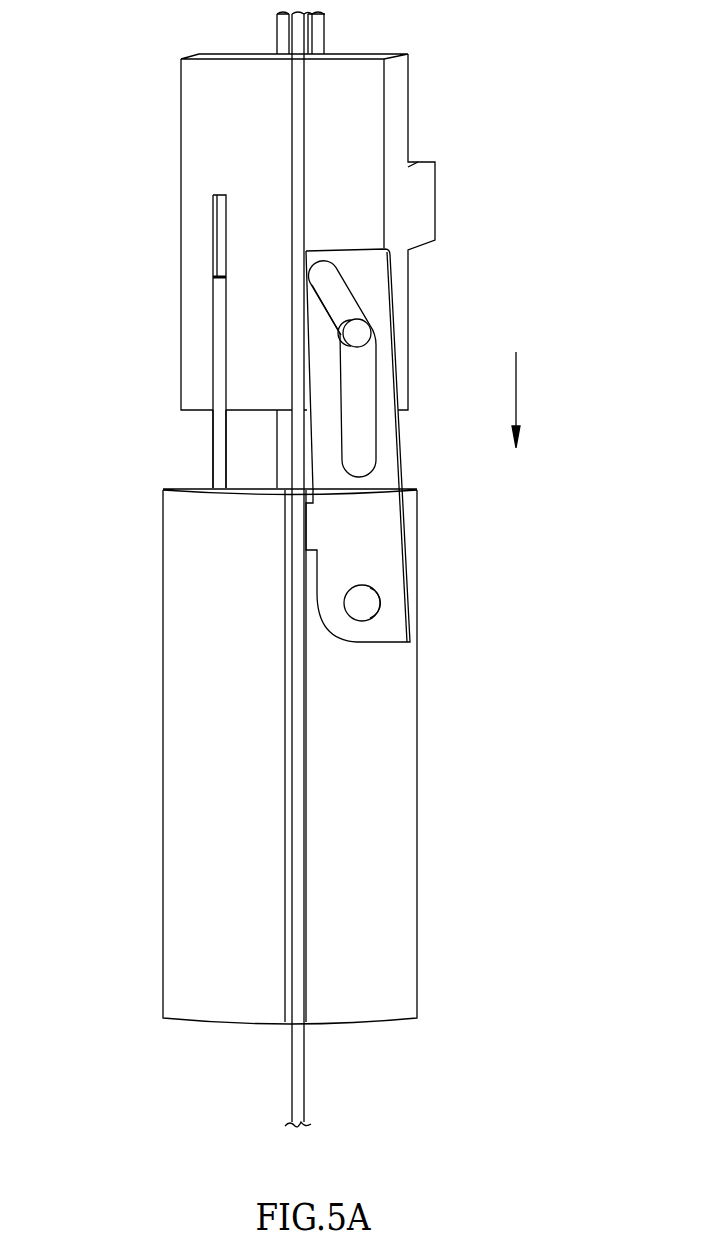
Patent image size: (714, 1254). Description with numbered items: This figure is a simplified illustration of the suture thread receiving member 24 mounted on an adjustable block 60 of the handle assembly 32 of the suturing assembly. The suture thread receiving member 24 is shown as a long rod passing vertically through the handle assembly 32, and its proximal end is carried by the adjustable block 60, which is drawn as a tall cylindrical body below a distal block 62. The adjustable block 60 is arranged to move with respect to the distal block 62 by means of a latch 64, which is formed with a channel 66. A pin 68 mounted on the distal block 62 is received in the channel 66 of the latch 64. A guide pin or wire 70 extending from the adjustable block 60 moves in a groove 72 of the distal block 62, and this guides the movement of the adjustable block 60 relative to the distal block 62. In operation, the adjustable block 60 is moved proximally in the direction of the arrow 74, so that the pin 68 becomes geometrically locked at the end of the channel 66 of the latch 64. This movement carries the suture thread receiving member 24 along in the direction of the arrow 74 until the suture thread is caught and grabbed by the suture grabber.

The suture thread receiving member 24 is at (297, 456).
The handle assembly 32 is at (150, 313).
The adjustable block 60 is at (390, 800).
The distal block 62 is at (200, 178).
The latch 64 is at (388, 478).
The channel 66 is at (362, 431).
The pin 68 is at (366, 324).
The guide pin or wire 70 is at (220, 445).
The groove 72 is at (213, 243).
The arrow 74 is at (517, 406).